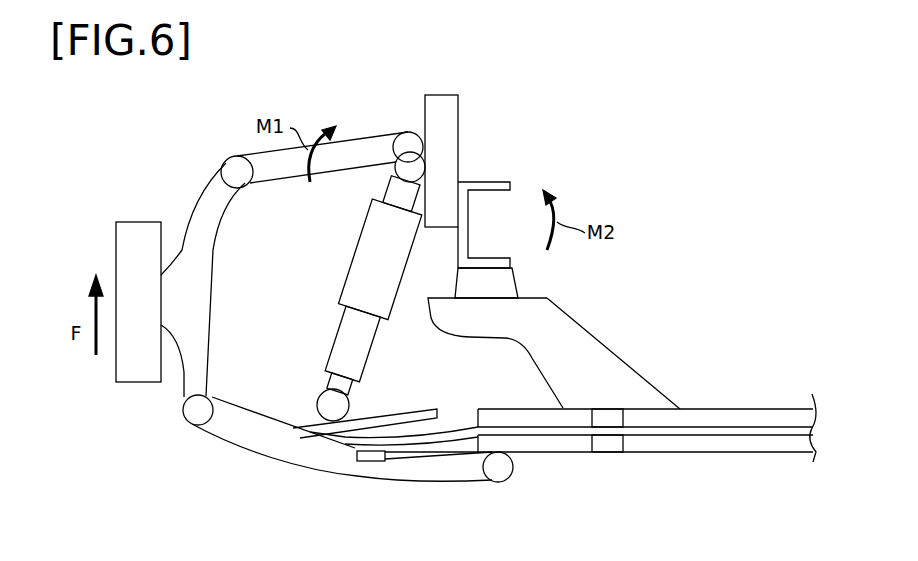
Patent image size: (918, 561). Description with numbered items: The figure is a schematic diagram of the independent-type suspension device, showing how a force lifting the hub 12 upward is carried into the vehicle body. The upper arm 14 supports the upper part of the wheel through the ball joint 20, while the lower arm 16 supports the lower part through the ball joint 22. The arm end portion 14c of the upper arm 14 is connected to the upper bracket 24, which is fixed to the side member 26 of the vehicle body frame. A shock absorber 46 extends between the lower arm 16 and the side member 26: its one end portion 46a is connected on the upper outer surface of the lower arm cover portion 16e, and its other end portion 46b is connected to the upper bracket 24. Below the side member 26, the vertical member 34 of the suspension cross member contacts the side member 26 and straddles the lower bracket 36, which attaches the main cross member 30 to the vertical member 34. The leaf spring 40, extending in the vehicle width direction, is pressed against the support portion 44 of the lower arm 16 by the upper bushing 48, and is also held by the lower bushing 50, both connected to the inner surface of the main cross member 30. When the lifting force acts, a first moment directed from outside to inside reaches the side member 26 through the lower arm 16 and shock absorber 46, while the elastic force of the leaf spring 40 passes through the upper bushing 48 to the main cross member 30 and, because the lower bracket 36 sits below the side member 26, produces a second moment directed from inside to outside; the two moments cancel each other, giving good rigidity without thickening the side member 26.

The hub 12 is at (137, 221).
The upper arm 14 is at (362, 147).
The arm end portion 14c is at (410, 134).
The lower arm 16 is at (410, 473).
The lower arm cover portion 16e is at (393, 416).
The ball joint 20 is at (232, 170).
The ball joint 22 is at (193, 420).
The upper bracket 24 is at (458, 113).
The side member 26 is at (492, 178).
The main cross member 30 is at (768, 408).
The vertical member 34 is at (515, 280).
The lower bracket 36 is at (587, 323).
The leaf spring 40 is at (743, 436).
The support portion 44 is at (358, 463).
The shock absorber 46 is at (358, 267).
The one end portion 46a is at (327, 405).
The other end portion 46b is at (390, 172).
The upper bushing 48 is at (625, 420).
The lower bushing 50 is at (610, 446).